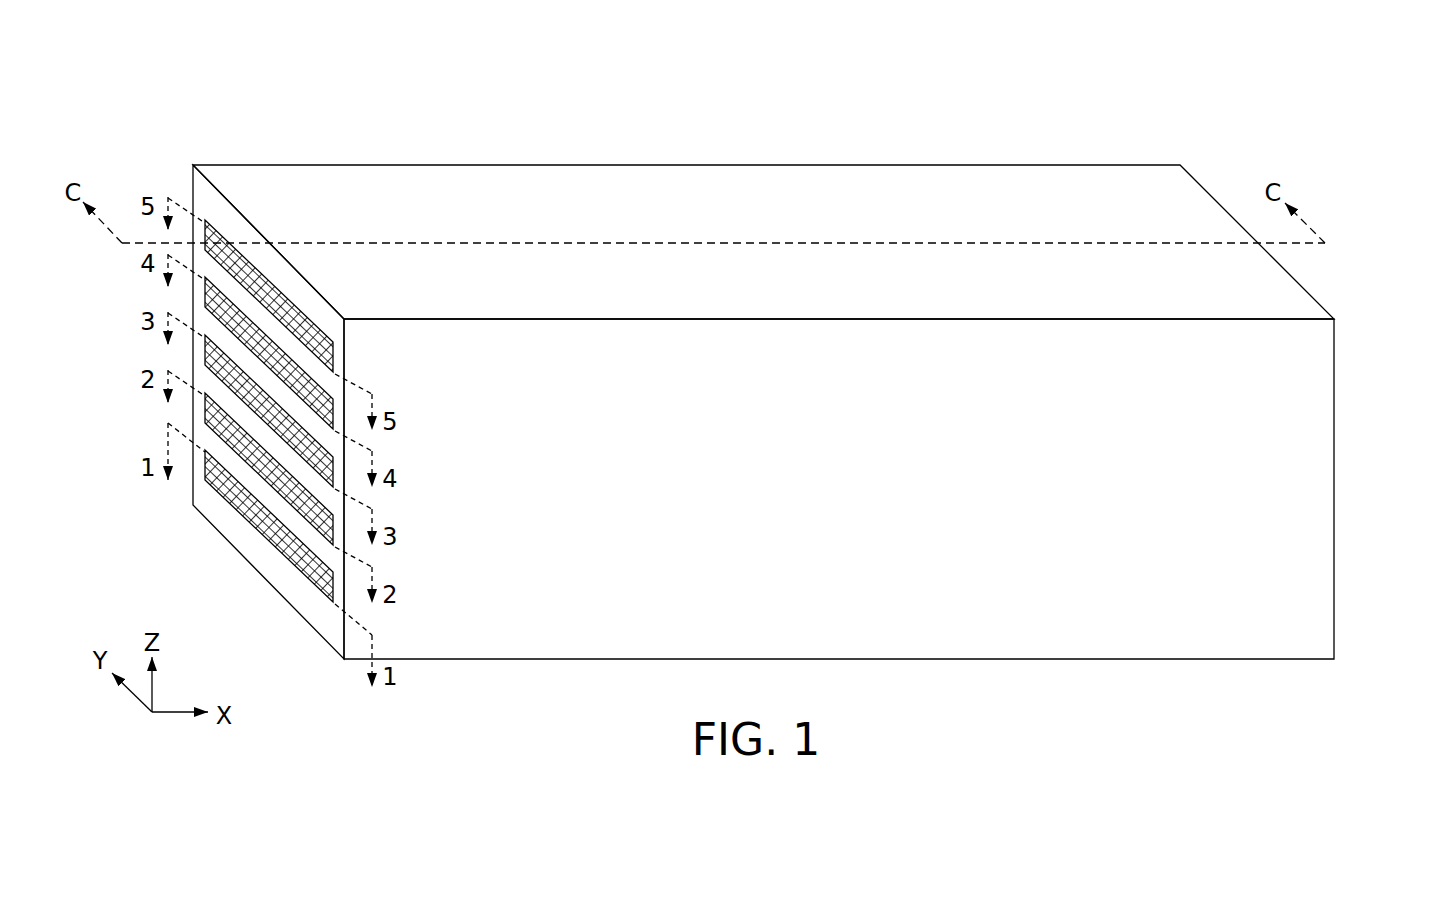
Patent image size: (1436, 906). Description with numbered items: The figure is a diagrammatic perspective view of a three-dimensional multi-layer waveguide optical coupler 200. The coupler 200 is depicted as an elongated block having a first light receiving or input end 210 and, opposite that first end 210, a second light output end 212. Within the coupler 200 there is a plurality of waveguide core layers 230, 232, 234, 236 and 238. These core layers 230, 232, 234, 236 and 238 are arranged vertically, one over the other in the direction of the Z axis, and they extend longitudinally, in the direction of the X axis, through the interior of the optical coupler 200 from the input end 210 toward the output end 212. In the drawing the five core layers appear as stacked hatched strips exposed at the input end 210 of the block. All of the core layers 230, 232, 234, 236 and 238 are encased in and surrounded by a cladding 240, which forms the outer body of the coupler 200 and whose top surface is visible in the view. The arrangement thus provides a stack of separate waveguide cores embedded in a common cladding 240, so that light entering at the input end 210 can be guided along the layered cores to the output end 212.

The three-dimensional multi-layer waveguide optical coupler 200 is at (770, 375).
The first light receiving or input end 210 is at (224, 393).
The second light output end 212 is at (1352, 603).
The waveguide core layer 230 is at (295, 568).
The waveguide core layer 232 is at (280, 492).
The waveguide core layer 234 is at (233, 395).
The waveguide core layer 236 is at (300, 372).
The waveguide core layer 238 is at (240, 248).
The cladding 240 is at (866, 178).